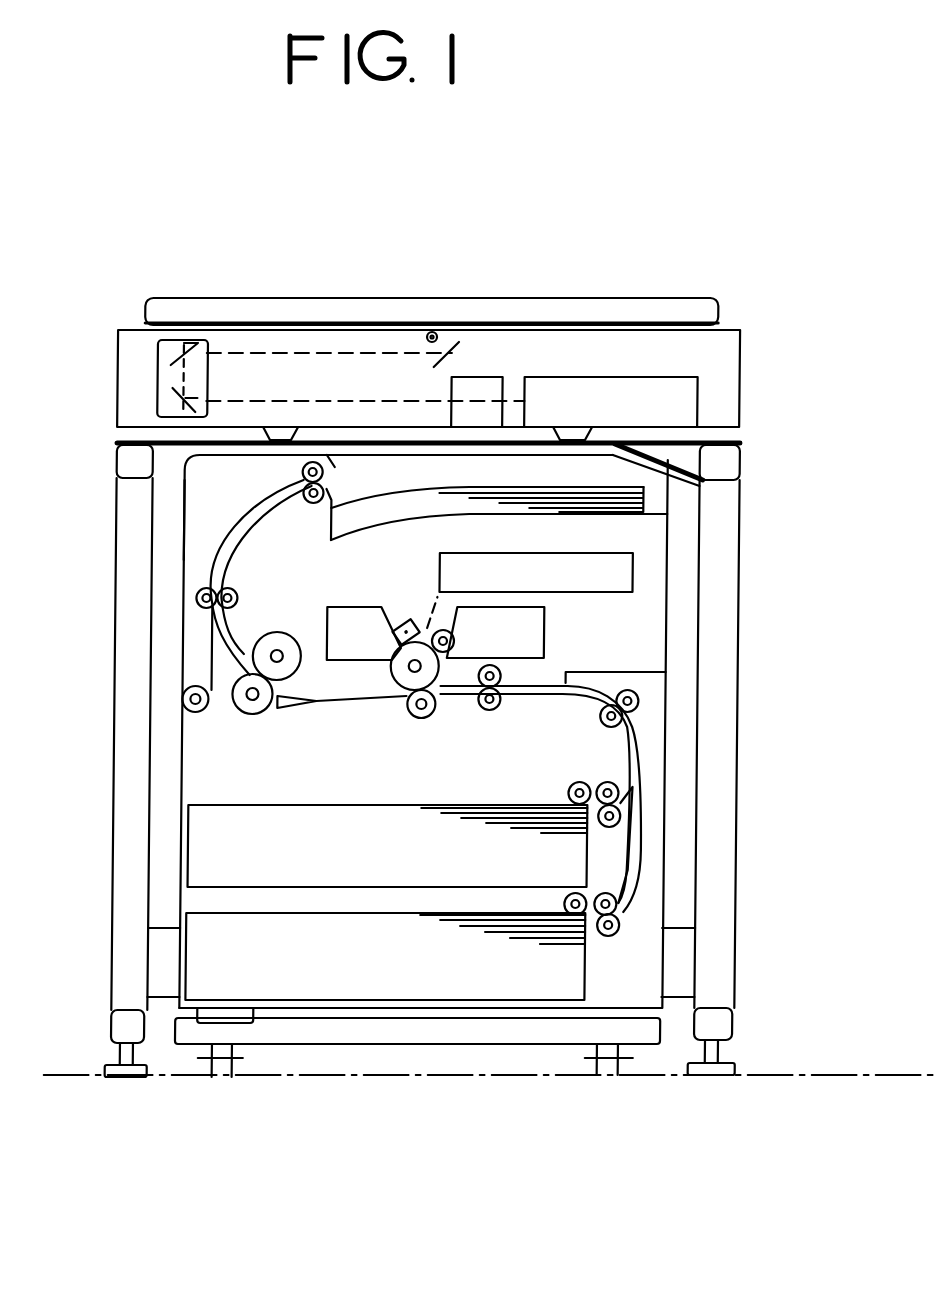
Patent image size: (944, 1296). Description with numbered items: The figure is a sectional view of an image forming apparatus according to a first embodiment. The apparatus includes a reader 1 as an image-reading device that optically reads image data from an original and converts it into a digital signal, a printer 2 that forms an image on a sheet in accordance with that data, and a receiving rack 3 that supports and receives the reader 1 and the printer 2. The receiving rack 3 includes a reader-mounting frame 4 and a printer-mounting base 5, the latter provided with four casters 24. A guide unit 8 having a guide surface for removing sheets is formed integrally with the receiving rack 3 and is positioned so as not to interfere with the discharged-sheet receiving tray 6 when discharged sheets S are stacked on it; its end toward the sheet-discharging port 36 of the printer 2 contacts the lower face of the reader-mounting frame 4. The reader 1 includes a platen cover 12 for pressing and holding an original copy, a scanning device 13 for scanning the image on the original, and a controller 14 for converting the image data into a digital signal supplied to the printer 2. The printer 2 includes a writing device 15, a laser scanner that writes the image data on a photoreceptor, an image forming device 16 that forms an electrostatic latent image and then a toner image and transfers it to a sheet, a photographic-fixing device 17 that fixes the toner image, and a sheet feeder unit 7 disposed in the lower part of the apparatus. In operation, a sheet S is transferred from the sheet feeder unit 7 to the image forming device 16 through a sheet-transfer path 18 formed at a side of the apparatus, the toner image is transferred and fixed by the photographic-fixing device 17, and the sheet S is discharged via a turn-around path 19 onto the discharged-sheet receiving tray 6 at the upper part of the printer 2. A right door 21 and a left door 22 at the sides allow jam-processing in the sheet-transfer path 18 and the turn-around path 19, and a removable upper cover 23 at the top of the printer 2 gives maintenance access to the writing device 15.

The reader 1 is at (729, 348).
The printer 2 is at (642, 605).
The receiving rack 3 is at (757, 670).
The reader-mounting frame 4 is at (356, 440).
The printer-mounting base 5 is at (629, 1033).
The discharged-sheet receiving tray 6 is at (378, 512).
The sheet feeder unit 7 is at (486, 822).
The guide unit 8 is at (668, 468).
The platen cover 12 is at (470, 313).
The scanning device 13 is at (229, 364).
The controller 14 is at (622, 395).
The writing device 15 is at (619, 565).
The image forming device 16 is at (411, 682).
The photographic-fixing device 17 is at (251, 705).
The sheet-transfer path 18 is at (640, 748).
The turn-around path 19 is at (218, 568).
The right door 21 is at (654, 838).
The left door 22 is at (198, 527).
The upper cover 23 is at (658, 512).
The casters 24 is at (614, 1060).
The sheet-discharging port 36 is at (308, 502).
The sheet S is at (626, 786).